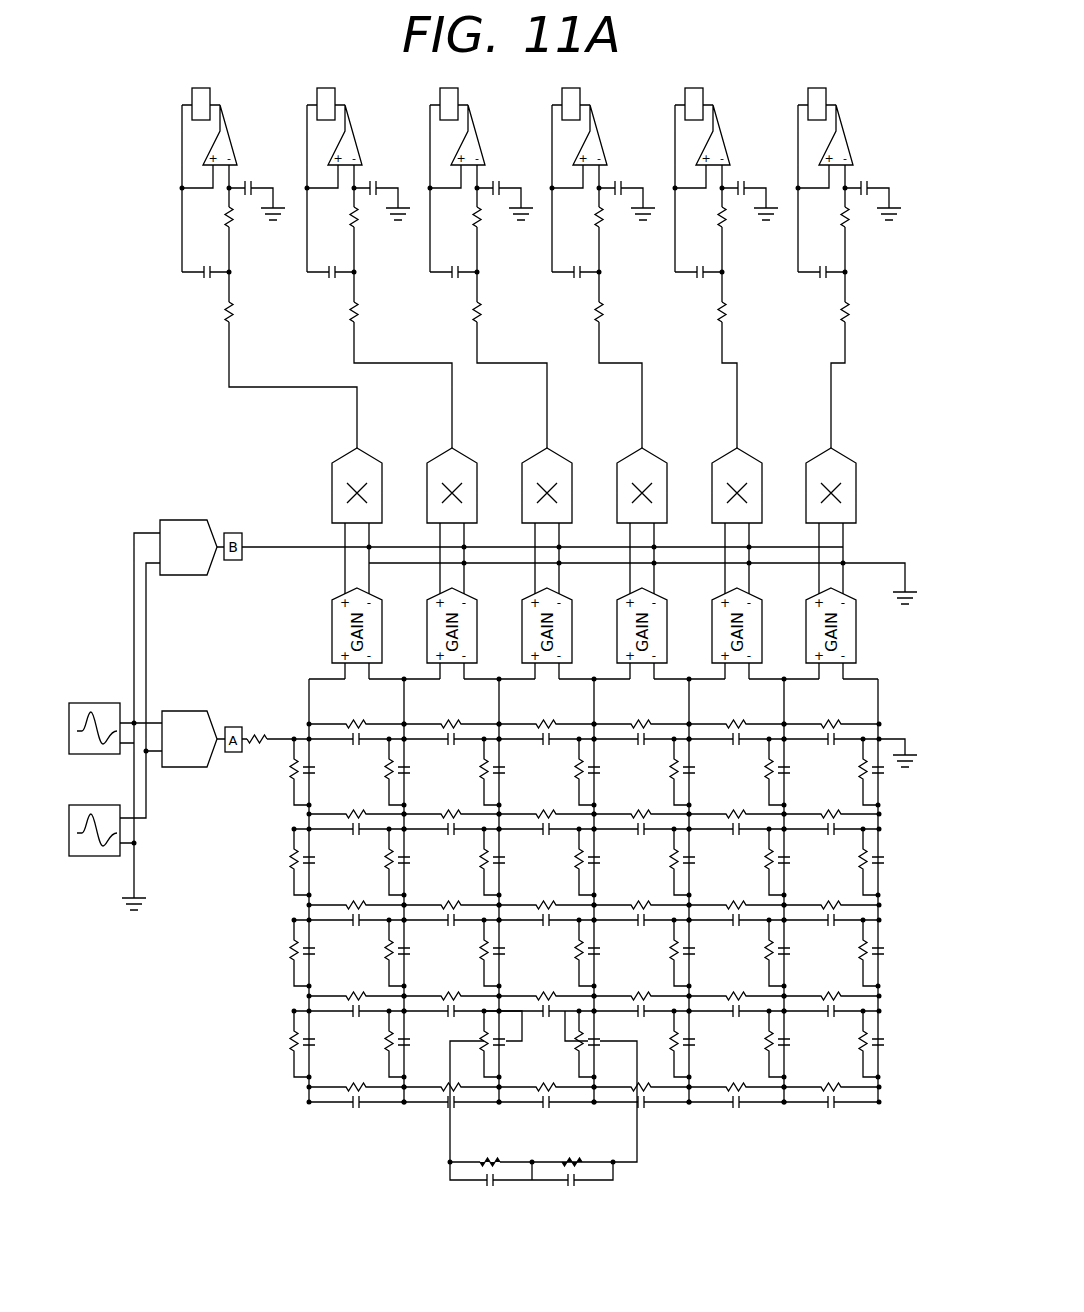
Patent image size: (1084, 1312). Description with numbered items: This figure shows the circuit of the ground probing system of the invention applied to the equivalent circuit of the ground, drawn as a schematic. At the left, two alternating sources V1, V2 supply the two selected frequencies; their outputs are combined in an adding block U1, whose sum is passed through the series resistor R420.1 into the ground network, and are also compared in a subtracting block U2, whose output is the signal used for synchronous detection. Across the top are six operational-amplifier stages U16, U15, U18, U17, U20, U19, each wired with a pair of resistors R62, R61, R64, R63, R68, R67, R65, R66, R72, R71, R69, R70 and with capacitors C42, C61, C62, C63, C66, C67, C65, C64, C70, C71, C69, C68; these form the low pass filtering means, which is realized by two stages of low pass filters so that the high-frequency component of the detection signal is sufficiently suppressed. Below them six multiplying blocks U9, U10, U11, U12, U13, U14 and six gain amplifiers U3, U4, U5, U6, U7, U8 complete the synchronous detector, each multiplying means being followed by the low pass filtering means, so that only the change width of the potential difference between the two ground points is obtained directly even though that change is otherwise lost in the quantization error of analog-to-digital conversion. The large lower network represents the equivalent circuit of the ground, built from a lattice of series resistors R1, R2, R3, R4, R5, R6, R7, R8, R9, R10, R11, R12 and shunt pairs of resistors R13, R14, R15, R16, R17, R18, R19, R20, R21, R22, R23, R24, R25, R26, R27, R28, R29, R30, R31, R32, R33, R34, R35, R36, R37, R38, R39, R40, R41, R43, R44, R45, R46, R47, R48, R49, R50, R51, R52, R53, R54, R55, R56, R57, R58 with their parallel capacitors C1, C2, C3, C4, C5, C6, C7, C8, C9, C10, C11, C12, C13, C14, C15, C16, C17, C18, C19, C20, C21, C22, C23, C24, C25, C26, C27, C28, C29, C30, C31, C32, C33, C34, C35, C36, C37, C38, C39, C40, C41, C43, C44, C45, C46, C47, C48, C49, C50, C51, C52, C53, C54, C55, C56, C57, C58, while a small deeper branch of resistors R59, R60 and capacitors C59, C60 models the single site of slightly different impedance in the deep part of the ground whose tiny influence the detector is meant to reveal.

The adder U1 is at (189, 724).
The subtractor U2 is at (188, 532).
The gain amplifier U3 is at (366, 625).
The gain amplifier U4 is at (461, 625).
The gain amplifier U5 is at (556, 625).
The gain amplifier U6 is at (651, 625).
The gain amplifier U7 is at (746, 625).
The gain amplifier U8 is at (840, 625).
The multiplier U9 is at (366, 505).
The multiplier U10 is at (461, 505).
The multiplier U11 is at (556, 505).
The multiplier U12 is at (651, 505).
The multiplier U13 is at (746, 505).
The multiplier U14 is at (840, 505).
The operational amplifier U15 is at (334, 139).
The operational amplifier U16 is at (209, 139).
The operational amplifier U17 is at (579, 139).
The operational amplifier U18 is at (457, 139).
The operational amplifier U19 is at (825, 139).
The operational amplifier U20 is at (702, 139).
The 150 kHz voltage source V1 is at (83, 729).
The 300 kHz voltage source V2 is at (83, 831).
The resistor R420.1 is at (243, 727).
The resistor R1 is at (357, 716).
The resistor R2 is at (452, 716).
The resistor R3 is at (547, 716).
The resistor R4 is at (642, 716).
The resistor R5 is at (737, 716).
The resistor R6 is at (832, 716).
The resistor R7 is at (832, 798).
The resistor R8 is at (737, 798).
The resistor R9 is at (642, 798).
The resistor R10 is at (547, 798).
The resistor R11 is at (452, 798).
The resistor R12 is at (357, 798).
The resistor R13 is at (384, 772).
The resistor R14 is at (289, 772).
The resistor R15 is at (479, 772).
The resistor R16 is at (574, 772).
The resistor R17 is at (669, 772).
The resistor R18 is at (764, 772).
The resistor R19 is at (858, 772).
The resistor R20 is at (858, 862).
The resistor R21 is at (764, 862).
The resistor R22 is at (669, 862).
The resistor R23 is at (574, 862).
The resistor R24 is at (479, 862).
The resistor R25 is at (289, 862).
The resistor R26 is at (384, 862).
The resistor R27 is at (357, 889).
The resistor R28 is at (452, 889).
The resistor R29 is at (547, 889).
The resistor R30 is at (642, 889).
The resistor R31 is at (737, 889).
The resistor R32 is at (832, 889).
The resistor R33 is at (858, 953).
The resistor R34 is at (764, 953).
The resistor R35 is at (669, 953).
The resistor R36 is at (574, 953).
The resistor R37 is at (479, 953).
The resistor R38 is at (289, 953).
The resistor R39 is at (384, 953).
The resistor R40 is at (357, 980).
The resistor R41 is at (452, 980).
The resistor R43 is at (642, 980).
The resistor R44 is at (737, 980).
The resistor R45 is at (832, 980).
The resistor R46 is at (858, 1044).
The resistor R47 is at (764, 1044).
The resistor R48 is at (669, 1044).
The resistor R49 is at (588, 1046).
The resistor R50 is at (489, 1034).
The resistor R51 is at (289, 1044).
The resistor R52 is at (384, 1044).
The resistor R53 is at (357, 1071).
The resistor R54 is at (452, 1071).
The resistor R55 is at (547, 1070).
The resistor R56 is at (661, 1117).
The resistor R57 is at (737, 1071).
The resistor R58 is at (832, 1071).
The resistor R59 is at (479, 1149).
The resistor R60 is at (563, 1149).
The resistor R61 is at (243, 315).
The resistor R62 is at (243, 231).
The resistor R63 is at (368, 315).
The resistor R64 is at (368, 231).
The resistor R65 is at (613, 231).
The resistor R66 is at (613, 315).
The resistor R67 is at (491, 315).
The resistor R68 is at (491, 231).
The resistor R69 is at (859, 231).
The resistor R70 is at (859, 315).
The resistor R71 is at (736, 315).
The resistor R72 is at (736, 231).
The capacitor C1 is at (354, 724).
The capacitor C2 is at (449, 724).
The capacitor C3 is at (544, 724).
The capacitor C4 is at (639, 724).
The capacitor C5 is at (734, 724).
The capacitor C6 is at (829, 724).
The capacitor C7 is at (816, 804).
The capacitor C8 is at (721, 804).
The capacitor C9 is at (626, 804).
The capacitor C10 is at (531, 804).
The capacitor C11 is at (436, 804).
The capacitor C12 is at (341, 804).
The capacitor C13 is at (385, 770).
The capacitor C14 is at (290, 782).
The capacitor C15 is at (480, 770).
The capacitor C16 is at (575, 770).
The capacitor C17 is at (670, 770).
The capacitor C18 is at (765, 770).
The capacitor C19 is at (859, 770).
The capacitor C20 is at (859, 860).
The capacitor C21 is at (765, 860).
The capacitor C22 is at (670, 860).
The capacitor C23 is at (575, 860).
The capacitor C24 is at (480, 860).
The capacitor C25 is at (290, 872).
The capacitor C26 is at (385, 860).
The capacitor C27 is at (341, 895).
The capacitor C28 is at (436, 895).
The capacitor C29 is at (531, 895).
The capacitor C30 is at (626, 895).
The capacitor C31 is at (721, 895).
The capacitor C32 is at (816, 895).
The capacitor C33 is at (859, 951).
The capacitor C34 is at (765, 951).
The capacitor C35 is at (670, 951).
The capacitor C36 is at (575, 951).
The capacitor C37 is at (480, 951).
The capacitor C38 is at (290, 963).
The capacitor C39 is at (385, 951).
The capacitor C40 is at (341, 986).
The capacitor C41 is at (436, 986).
The capacitor C42 is at (258, 184).
The capacitor C43 is at (626, 986).
The capacitor C44 is at (721, 986).
The capacitor C45 is at (816, 986).
The capacitor C46 is at (859, 1042).
The capacitor C47 is at (765, 1042).
The capacitor C48 is at (670, 1042).
The capacitor C49 is at (634, 1107).
The capacitor C50 is at (513, 1005).
The capacitor C51 is at (290, 1054).
The capacitor C52 is at (385, 1042).
The capacitor C53 is at (341, 1077).
The capacitor C54 is at (436, 1077).
The capacitor C55 is at (540, 1077).
The capacitor C56 is at (646, 1103).
The capacitor C57 is at (722, 1077).
The capacitor C58 is at (816, 1077).
The capacitor C59 is at (482, 1165).
The capacitor C60 is at (566, 1165).
The capacitor C61 is at (201, 244).
The capacitor C62 is at (383, 184).
The capacitor C63 is at (326, 244).
The capacitor C64 is at (571, 244).
The capacitor C65 is at (628, 184).
The capacitor C66 is at (506, 184).
The capacitor C67 is at (449, 244).
The capacitor C68 is at (817, 244).
The capacitor C69 is at (874, 184).
The capacitor C70 is at (751, 184).
The capacitor C71 is at (694, 244).